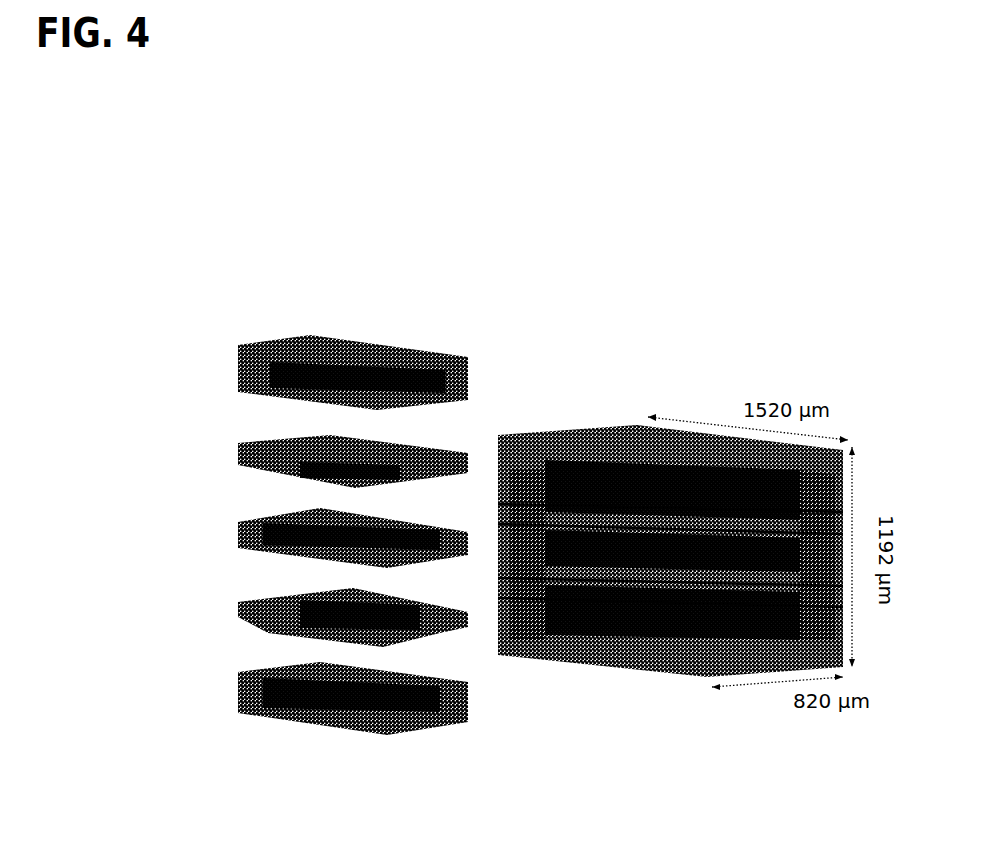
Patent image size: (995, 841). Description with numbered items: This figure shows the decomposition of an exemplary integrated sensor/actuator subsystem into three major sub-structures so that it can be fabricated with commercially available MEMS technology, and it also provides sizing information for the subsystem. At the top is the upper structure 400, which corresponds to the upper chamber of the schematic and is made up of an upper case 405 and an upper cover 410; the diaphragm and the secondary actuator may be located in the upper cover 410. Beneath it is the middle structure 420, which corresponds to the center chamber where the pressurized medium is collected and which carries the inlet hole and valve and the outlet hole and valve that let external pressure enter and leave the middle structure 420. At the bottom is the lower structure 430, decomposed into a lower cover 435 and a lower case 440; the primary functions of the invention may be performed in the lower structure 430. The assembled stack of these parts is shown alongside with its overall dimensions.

The upper structure 400 is at (220, 482).
The upper case 405 is at (427, 358).
The upper cover 410 is at (452, 450).
The middle structure 420 is at (220, 565).
The lower structure 430 is at (220, 738).
The lower cover 435 is at (403, 603).
The lower case 440 is at (433, 722).